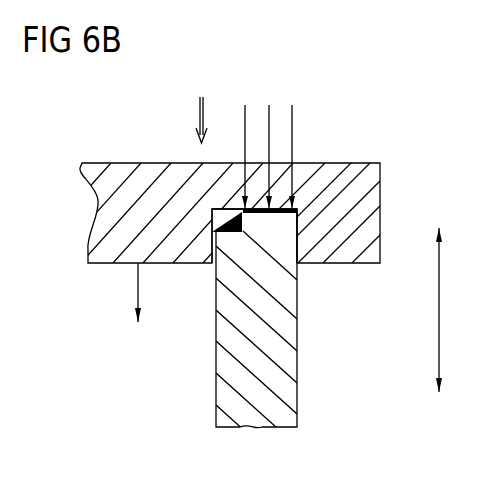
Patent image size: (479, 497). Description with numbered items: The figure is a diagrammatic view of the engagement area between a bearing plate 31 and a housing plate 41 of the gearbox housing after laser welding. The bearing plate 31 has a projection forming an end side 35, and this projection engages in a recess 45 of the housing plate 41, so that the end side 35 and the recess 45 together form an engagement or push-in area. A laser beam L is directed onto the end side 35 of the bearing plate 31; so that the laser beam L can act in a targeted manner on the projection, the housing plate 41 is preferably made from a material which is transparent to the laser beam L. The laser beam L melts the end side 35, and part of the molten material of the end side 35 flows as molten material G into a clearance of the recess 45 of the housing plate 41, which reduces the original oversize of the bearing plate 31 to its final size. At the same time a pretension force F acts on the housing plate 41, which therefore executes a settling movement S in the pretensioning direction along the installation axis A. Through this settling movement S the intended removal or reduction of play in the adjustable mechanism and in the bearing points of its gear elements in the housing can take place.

The housing plate 41 is at (134, 178).
The end side 35 is at (323, 185).
The bearing plate 31 is at (275, 355).
The recess 45 is at (281, 233).
The molten material G is at (223, 233).
The laser beam L is at (294, 124).
The pretension force F is at (195, 118).
The settling movement S is at (129, 292).
The installation axis A is at (447, 310).